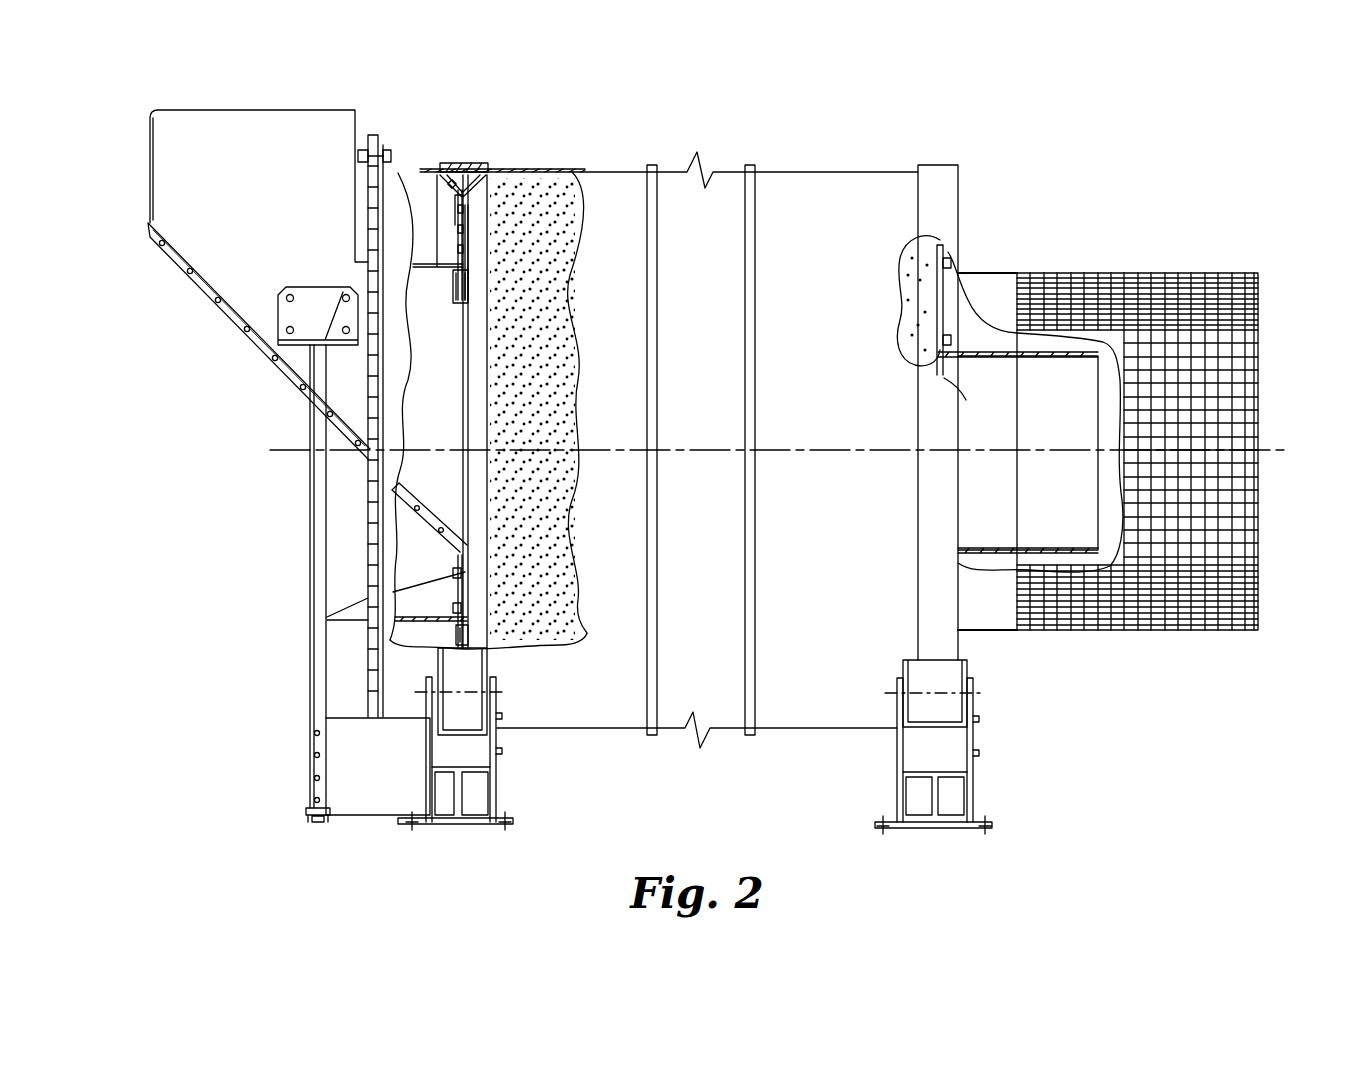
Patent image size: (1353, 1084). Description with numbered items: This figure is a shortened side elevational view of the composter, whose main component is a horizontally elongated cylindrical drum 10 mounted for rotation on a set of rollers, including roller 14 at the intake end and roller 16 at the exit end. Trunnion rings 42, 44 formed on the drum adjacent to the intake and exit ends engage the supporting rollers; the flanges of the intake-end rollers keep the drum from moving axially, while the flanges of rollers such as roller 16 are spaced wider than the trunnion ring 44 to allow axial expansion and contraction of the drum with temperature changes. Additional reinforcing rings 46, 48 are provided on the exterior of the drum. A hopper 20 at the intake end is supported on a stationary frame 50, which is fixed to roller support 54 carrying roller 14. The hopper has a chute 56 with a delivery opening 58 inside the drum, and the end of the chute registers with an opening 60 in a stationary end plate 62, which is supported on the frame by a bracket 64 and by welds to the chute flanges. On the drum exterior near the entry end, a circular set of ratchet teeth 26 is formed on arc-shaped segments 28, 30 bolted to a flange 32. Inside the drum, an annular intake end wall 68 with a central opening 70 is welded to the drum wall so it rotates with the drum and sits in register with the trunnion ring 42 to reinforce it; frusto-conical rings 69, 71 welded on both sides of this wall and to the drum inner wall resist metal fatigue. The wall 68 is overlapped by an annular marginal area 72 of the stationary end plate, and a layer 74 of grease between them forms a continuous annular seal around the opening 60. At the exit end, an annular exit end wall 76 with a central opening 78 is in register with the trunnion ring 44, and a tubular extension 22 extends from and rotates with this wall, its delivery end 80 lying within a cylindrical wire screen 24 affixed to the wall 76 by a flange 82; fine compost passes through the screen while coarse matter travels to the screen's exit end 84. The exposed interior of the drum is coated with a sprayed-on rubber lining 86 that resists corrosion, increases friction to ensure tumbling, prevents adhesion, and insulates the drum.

The cylindrical drum 10 is at (600, 170).
The roller 14 is at (467, 667).
The roller 16 is at (942, 673).
The hopper 20 is at (163, 168).
The tubular extension 22 is at (1063, 352).
The cylindrical wire screen 24 is at (1215, 273).
The ratchet teeth 26 is at (372, 188).
The arc-shaped segment 28 is at (370, 278).
The arc-shaped segment 30 is at (368, 503).
The flange 32 is at (398, 160).
The trunnion ring 42 is at (488, 165).
The trunnion ring 44 is at (927, 532).
The reinforcing ring 46 is at (657, 315).
The reinforcing ring 48 is at (755, 258).
The stationary frame 50 is at (320, 582).
The roller support 54 is at (425, 752).
The chute 56 is at (437, 470).
The delivery opening 58 is at (462, 352).
The opening 60 is at (468, 407).
The stationary end plate 62 is at (470, 563).
The bracket 64 is at (435, 598).
The annular intake end wall 68 is at (467, 233).
The frusto-conical ring 69 is at (460, 192).
The central opening 70 is at (467, 297).
The frusto-conical ring 71 is at (476, 198).
The annular marginal area 72 is at (477, 240).
The layer of grease 74 is at (473, 268).
The annular exit end wall 76 is at (933, 330).
The central opening 78 is at (938, 367).
The delivery end 80 is at (1097, 407).
The flange 82 is at (943, 260).
The exit end 84 is at (1262, 362).
The sprayed-on rubber lining 86 is at (553, 313).